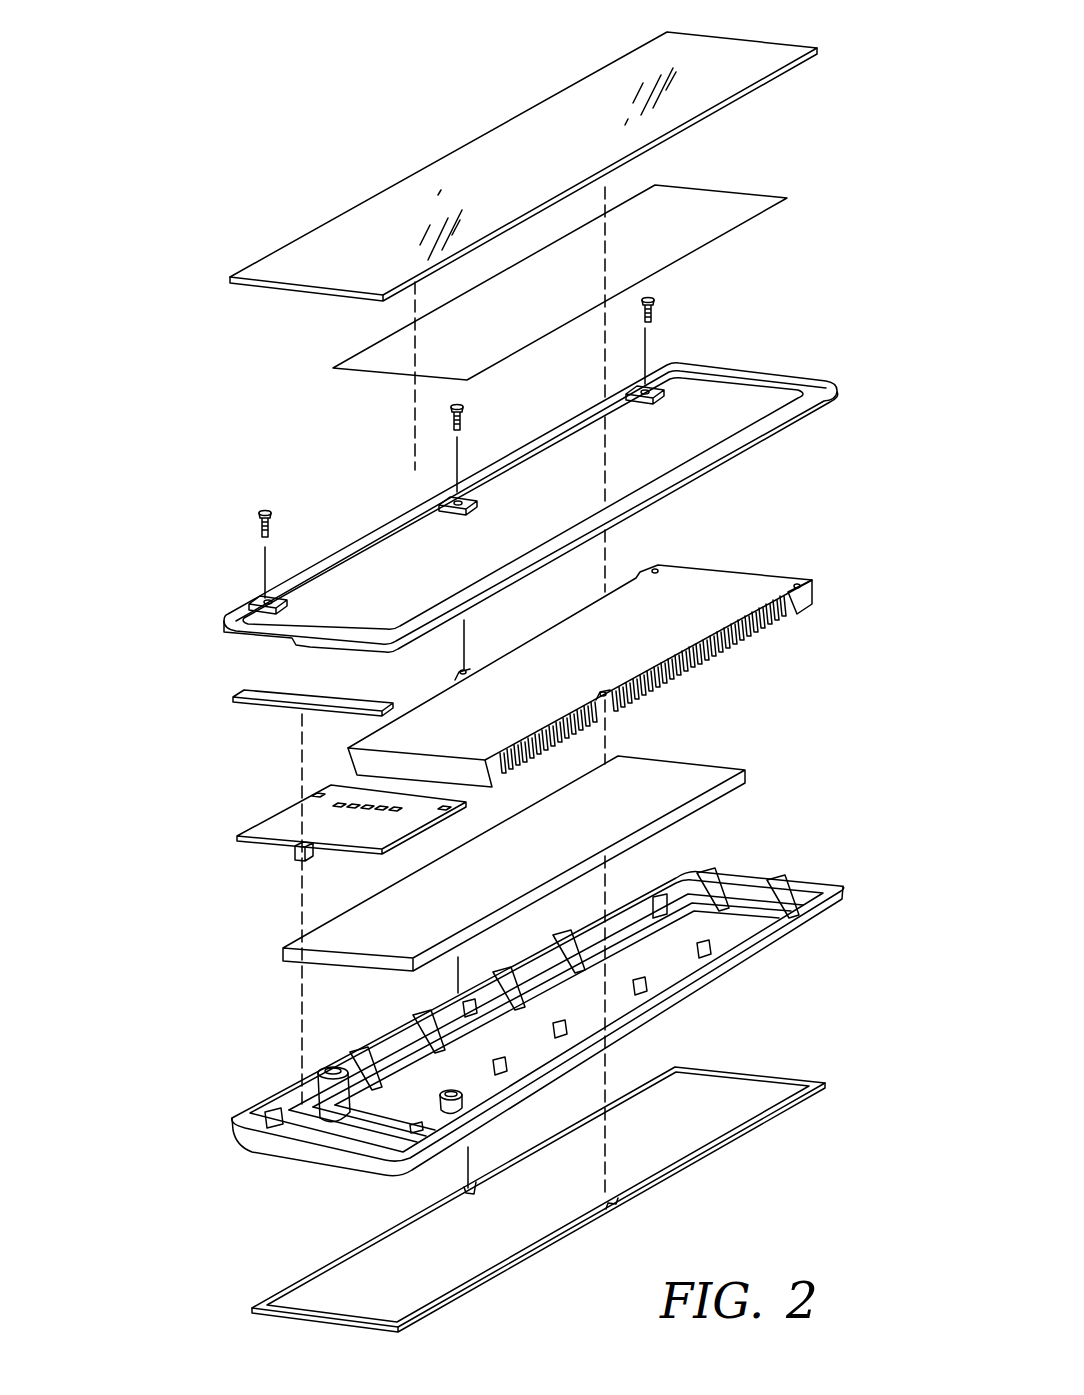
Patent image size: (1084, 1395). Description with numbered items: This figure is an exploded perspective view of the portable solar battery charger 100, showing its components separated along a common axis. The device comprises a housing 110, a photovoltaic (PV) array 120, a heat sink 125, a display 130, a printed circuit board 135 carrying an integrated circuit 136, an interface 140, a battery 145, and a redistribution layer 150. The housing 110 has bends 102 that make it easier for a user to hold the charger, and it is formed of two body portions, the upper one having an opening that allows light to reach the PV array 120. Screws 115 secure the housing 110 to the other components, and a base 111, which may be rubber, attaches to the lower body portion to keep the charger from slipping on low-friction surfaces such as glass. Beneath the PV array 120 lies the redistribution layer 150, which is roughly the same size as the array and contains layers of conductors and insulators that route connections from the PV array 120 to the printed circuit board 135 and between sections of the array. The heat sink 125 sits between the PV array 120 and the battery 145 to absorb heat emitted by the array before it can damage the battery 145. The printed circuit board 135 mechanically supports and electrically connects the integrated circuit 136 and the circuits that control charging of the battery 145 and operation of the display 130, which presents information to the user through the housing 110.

The portable solar battery charger 100 is at (236, 80).
The photovoltaic (PV) array 120 is at (735, 57).
The redistribution layer 150 is at (725, 200).
The screws 115 is at (662, 303).
The housing 110 is at (760, 373).
The bends 102 is at (440, 495).
The heat sink 125 is at (745, 578).
The display 130 is at (262, 690).
The printed circuit board 135 is at (290, 815).
The integrated circuit 136 is at (337, 800).
The interface 140 is at (295, 856).
The battery 145 is at (672, 773).
The base 111 is at (790, 1080).